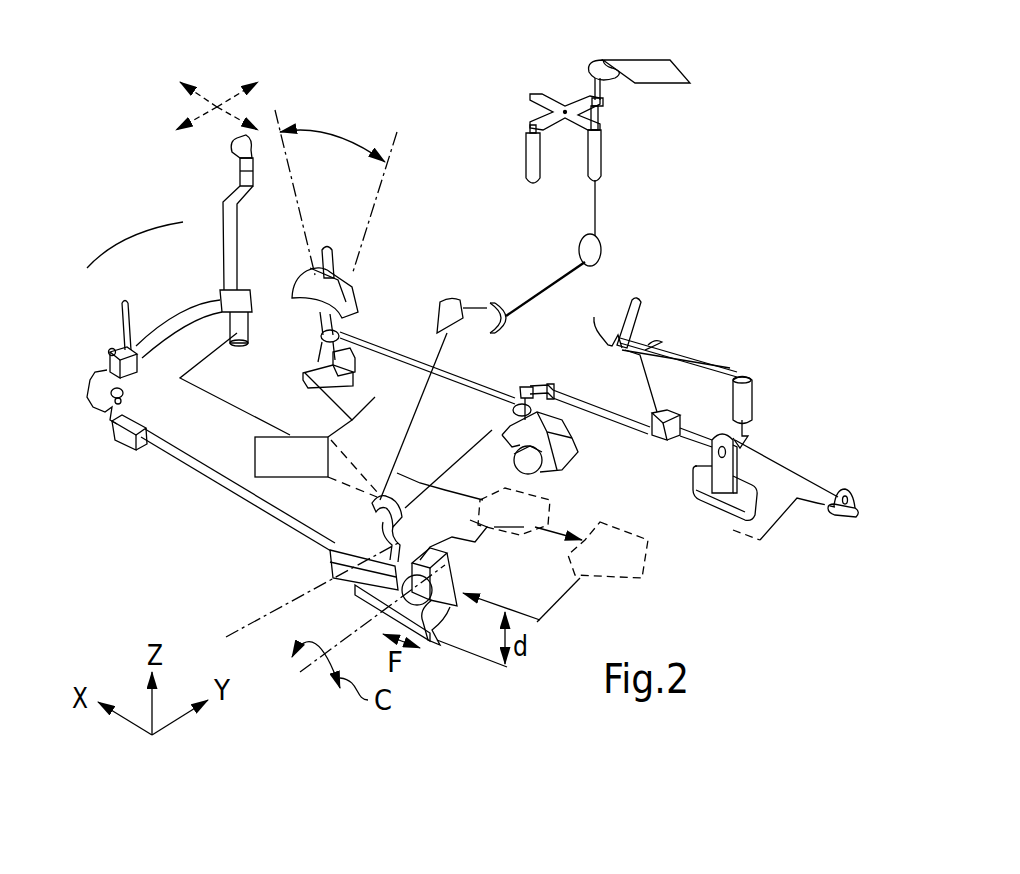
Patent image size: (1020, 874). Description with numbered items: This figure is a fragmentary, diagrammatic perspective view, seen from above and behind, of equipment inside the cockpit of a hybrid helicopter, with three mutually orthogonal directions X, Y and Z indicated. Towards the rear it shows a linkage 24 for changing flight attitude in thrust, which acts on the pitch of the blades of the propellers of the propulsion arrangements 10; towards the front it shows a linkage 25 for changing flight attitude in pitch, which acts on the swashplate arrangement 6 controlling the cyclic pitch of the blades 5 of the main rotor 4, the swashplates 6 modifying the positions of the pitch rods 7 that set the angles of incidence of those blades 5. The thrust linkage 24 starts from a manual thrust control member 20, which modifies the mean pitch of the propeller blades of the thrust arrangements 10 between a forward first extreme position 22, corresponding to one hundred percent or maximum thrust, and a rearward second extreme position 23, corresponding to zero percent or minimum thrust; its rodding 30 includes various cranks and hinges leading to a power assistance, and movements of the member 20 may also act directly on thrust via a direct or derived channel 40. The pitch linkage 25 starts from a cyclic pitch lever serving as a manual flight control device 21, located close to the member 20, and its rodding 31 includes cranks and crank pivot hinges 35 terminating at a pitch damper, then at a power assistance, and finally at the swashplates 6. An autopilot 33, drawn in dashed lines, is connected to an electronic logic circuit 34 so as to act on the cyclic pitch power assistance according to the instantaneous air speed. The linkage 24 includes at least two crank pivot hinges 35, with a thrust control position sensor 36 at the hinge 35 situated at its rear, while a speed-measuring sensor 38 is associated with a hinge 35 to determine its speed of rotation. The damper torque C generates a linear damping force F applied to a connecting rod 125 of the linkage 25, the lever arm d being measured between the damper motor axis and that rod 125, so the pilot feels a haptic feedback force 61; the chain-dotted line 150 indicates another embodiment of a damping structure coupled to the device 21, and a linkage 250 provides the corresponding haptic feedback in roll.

The main rotor 4 is at (694, 72).
The blades 5 is at (655, 66).
The swashplate arrangement 6 is at (546, 90).
The pitch rods 7 is at (600, 88).
The thrust arrangements 10 is at (641, 301).
The manual thrust control member 20 is at (340, 244).
The manual flight control device 21 is at (222, 158).
The first extreme position 22 is at (277, 112).
The second extreme position 23 is at (388, 161).
The linkage for changing flight attitude in thrust 24 is at (712, 518).
The linkage for changing flight attitude in pitching 25 is at (465, 620).
The rodding 30 is at (463, 393).
The rodding 31 is at (144, 377).
The autopilot 33 is at (632, 560).
The electronic logic circuit 34 is at (530, 514).
The crank pivot hinges 35 is at (217, 290).
The thrust control position sensor 36 is at (847, 522).
The speed sensor 38 is at (255, 312).
The direct or derived channel 40 is at (653, 393).
The haptic feedback force 61 is at (217, 105).
The connecting rod 125 is at (340, 623).
The damping structure 150 is at (257, 610).
The roll haptic feedback linkage 250 is at (336, 446).